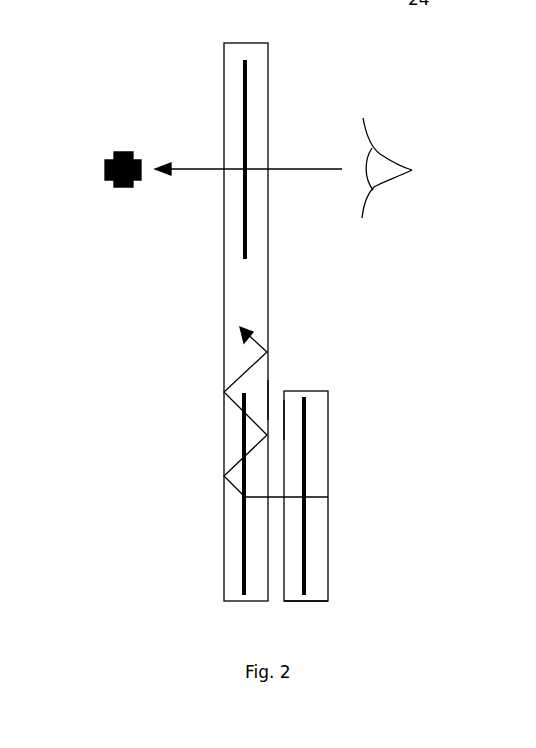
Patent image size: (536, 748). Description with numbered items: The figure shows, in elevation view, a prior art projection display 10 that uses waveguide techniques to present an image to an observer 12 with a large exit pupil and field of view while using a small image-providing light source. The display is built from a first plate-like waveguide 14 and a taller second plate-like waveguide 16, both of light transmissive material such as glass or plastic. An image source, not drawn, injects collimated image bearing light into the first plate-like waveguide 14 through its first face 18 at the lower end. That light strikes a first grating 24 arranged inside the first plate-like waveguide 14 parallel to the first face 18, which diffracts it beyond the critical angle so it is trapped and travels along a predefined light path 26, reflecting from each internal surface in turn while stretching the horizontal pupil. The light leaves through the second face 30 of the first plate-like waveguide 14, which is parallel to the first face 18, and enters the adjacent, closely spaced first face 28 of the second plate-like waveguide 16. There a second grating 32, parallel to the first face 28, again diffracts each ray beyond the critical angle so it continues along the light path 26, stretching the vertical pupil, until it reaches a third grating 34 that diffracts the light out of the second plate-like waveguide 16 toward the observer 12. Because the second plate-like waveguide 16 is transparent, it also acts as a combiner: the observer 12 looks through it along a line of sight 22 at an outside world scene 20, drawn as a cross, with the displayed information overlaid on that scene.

The projection display 10 is at (317, 52).
The observer 12 is at (375, 177).
The first plate-like waveguide 14 is at (318, 457).
The second plate-like waveguide 16 is at (257, 273).
The first face 18 is at (328, 577).
The outside world scene 20 is at (122, 152).
The line of sight 22 is at (188, 170).
The first grating 24 is at (306, 535).
The predefined light path 26 is at (224, 353).
The first face of second plate-like waveguide 28 is at (268, 400).
The second face of first plate-like waveguide 30 is at (284, 420).
The second grating 32 is at (242, 562).
The third grating 34 is at (247, 103).